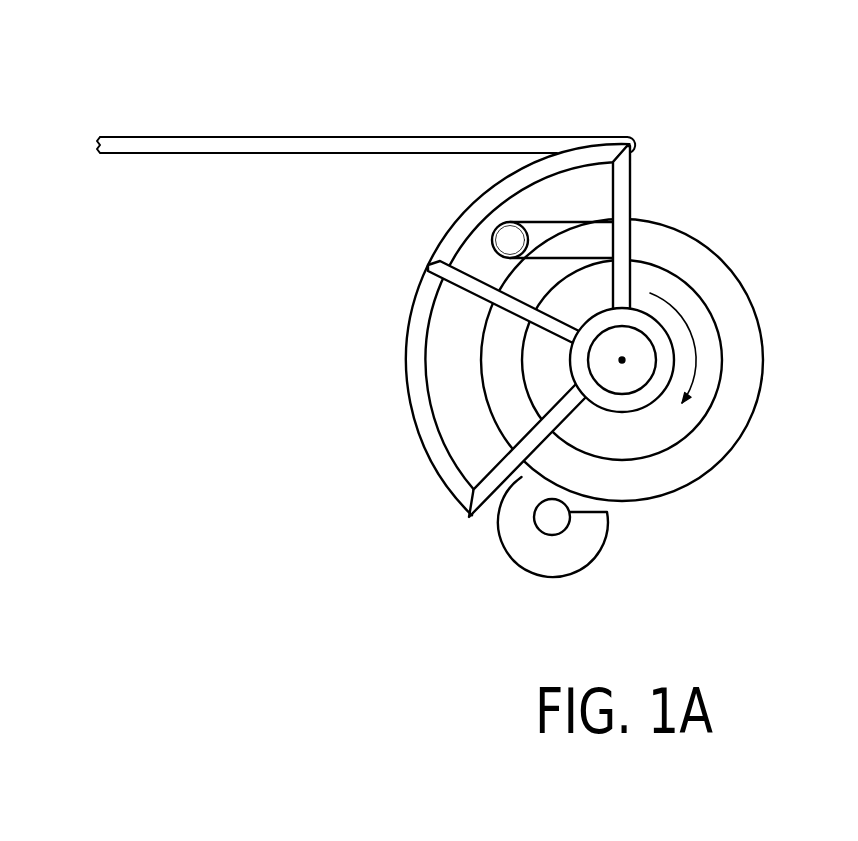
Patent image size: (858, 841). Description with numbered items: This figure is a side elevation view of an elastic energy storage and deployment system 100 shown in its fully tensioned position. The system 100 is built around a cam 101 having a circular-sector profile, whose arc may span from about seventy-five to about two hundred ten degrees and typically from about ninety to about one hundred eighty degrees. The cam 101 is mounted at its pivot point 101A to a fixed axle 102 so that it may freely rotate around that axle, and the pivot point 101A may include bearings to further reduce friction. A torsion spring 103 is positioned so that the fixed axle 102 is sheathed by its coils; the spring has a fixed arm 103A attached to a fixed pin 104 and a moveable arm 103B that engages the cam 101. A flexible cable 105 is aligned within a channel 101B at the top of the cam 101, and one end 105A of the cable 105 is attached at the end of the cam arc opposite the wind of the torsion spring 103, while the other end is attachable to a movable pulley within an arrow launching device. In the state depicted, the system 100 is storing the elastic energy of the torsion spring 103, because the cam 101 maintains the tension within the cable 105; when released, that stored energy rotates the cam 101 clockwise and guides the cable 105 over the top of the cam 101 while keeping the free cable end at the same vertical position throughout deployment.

The elastic energy storage and deployment system 100 is at (664, 48).
The cam 101 is at (632, 196).
The pivot point 101A is at (623, 360).
The channel 101B is at (461, 184).
The fixed axle 102 is at (623, 380).
The torsion spring 103 is at (722, 437).
The fixed arm 103A is at (590, 557).
The moveable arm 103B is at (487, 239).
The fixed pin 104 is at (547, 520).
The flexible cable 105 is at (184, 135).
The cable end 105A is at (640, 142).